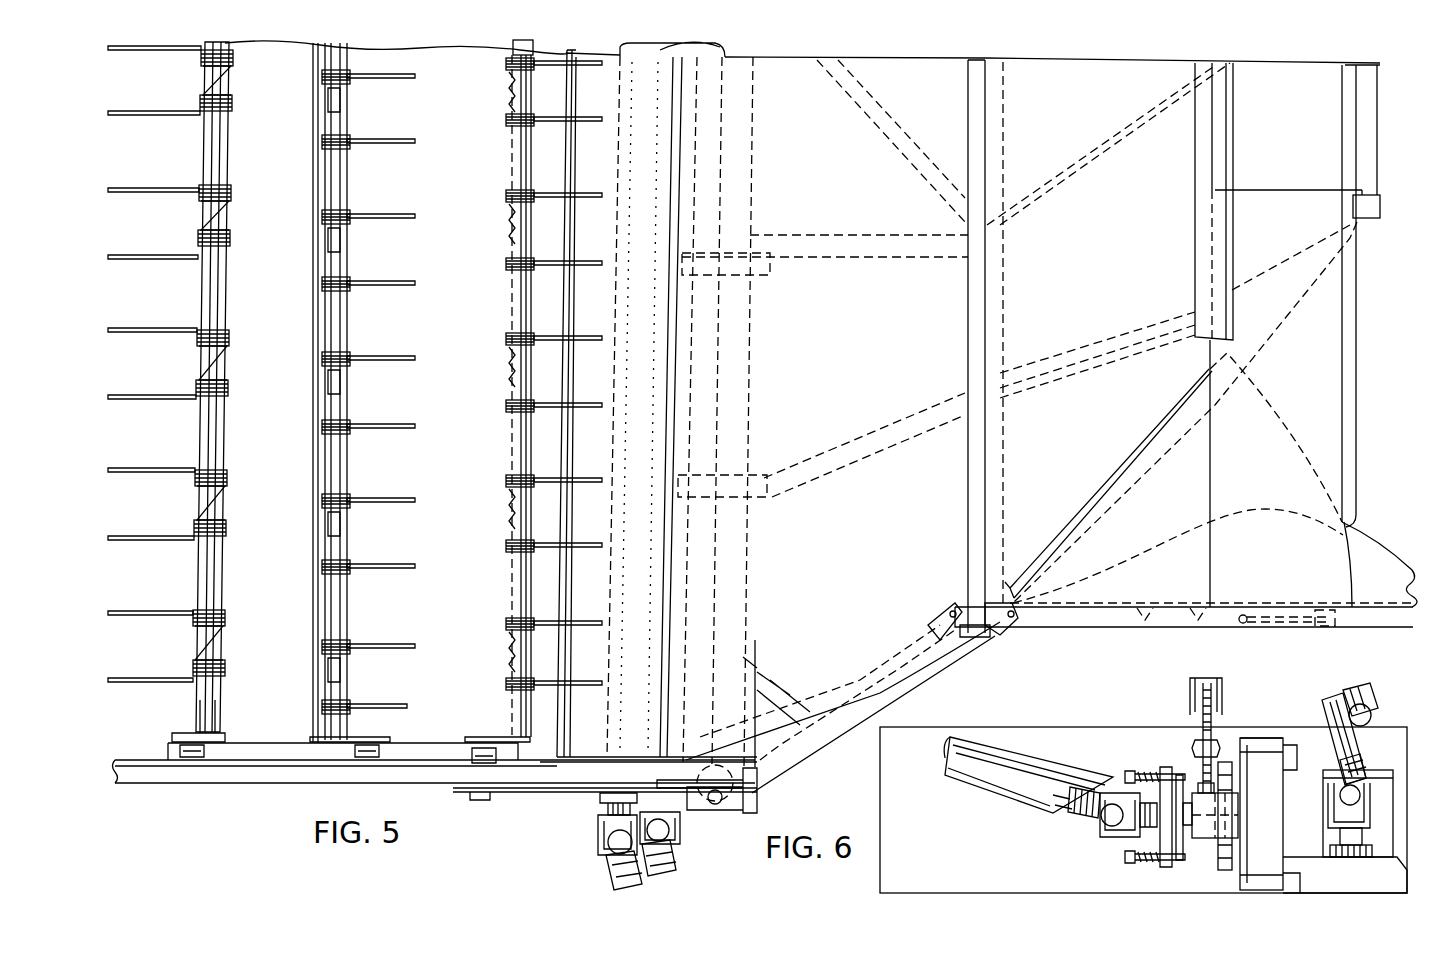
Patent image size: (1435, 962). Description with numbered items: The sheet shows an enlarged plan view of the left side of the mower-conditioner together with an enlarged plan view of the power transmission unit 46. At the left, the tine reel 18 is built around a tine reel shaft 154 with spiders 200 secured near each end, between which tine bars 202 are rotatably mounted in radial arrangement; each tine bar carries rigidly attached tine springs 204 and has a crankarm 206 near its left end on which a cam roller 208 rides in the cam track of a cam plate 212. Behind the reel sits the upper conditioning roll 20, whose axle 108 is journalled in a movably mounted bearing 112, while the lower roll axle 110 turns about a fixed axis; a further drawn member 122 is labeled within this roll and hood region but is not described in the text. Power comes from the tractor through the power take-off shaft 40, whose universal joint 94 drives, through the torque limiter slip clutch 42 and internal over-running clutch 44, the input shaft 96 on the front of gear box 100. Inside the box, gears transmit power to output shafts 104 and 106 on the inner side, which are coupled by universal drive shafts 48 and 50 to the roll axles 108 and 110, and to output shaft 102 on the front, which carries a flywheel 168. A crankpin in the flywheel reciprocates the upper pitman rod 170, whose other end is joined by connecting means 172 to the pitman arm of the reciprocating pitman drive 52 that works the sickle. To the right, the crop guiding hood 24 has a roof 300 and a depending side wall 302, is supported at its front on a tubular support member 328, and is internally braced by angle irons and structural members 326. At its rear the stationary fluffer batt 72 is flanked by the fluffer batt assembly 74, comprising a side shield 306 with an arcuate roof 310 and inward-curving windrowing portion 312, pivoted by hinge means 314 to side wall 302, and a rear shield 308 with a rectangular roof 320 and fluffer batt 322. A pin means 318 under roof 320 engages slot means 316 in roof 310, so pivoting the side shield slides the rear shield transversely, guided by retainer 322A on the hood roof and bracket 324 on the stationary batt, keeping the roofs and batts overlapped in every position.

In FIG. 5, the tine reel 18 is at (355, 377).
In FIG. 5, the upper conditioning roll 20 is at (570, 593).
In FIG. 5, the crop guiding hood 24 is at (823, 412).
In FIG. 6, the power take-off shaft 40 is at (993, 792).
In FIG. 6, the torque limiter slip clutch 42 is at (1160, 768).
In FIG. 6, the internal over-running clutch 44 is at (1178, 840).
In FIG. 6, the power transmission unit 46 is at (1261, 814).
In FIG. 5, the universal drive shaft 48 is at (607, 872).
In FIG. 6, the universal drive shaft 48 is at (1325, 713).
In FIG. 5, the universal drive shaft 50 is at (672, 866).
In FIG. 6, the universal drive shaft 50 is at (1372, 700).
In FIG. 6, the reciprocating pitman drive 52 is at (1243, 732).
In FIG. 5, the stationary fluffer batt 72 is at (1352, 155).
In FIG. 5, the fluffer batt assembly 74 is at (1068, 640).
In FIG. 6, the universal joint 94 is at (1108, 824).
In FIG. 6, the input shaft 96 is at (1186, 798).
In FIG. 6, the gear box 100 is at (1310, 880).
In FIG. 6, the power output shaft 102 is at (1232, 815).
In FIG. 6, the power output shaft 104 is at (1338, 833).
In FIG. 6, the power output shaft 106 is at (1365, 757).
In FIG. 5, the axle 108 is at (623, 758).
In FIG. 5, the axle 110 is at (653, 752).
In FIG. 5, the bearing 112 is at (600, 798).
In FIG. 5, the guide member 122 is at (690, 430).
In FIG. 5, the tine reel shaft 154 is at (318, 602).
In FIG. 6, the flywheel 168 is at (1232, 778).
In FIG. 6, the upper pitman rod 170 is at (1200, 720).
In FIG. 6, the connecting means 172 is at (1212, 686).
In FIG. 5, the spiders 200 is at (445, 750).
In FIG. 5, the tine bars 202 is at (223, 556).
In FIG. 5, the tine springs 204 is at (388, 563).
In FIG. 5, the crankarm 206 is at (180, 734).
In FIG. 5, the cam roller 208 is at (205, 752).
In FIG. 5, the cam plate 212 is at (172, 745).
In FIG. 5, the roof 300 is at (1095, 348).
In FIG. 5, the side wall 302 is at (822, 722).
In FIG. 5, the side shield 306 is at (1352, 636).
In FIG. 5, the rear shield 308 is at (1390, 441).
In FIG. 5, the roof 310 is at (1118, 468).
In FIG. 5, the windrowing portion 312 is at (1377, 553).
In FIG. 5, the hinge means 314 is at (1010, 628).
In FIG. 5, the slot means 316 is at (1322, 630).
In FIG. 5, the pin means 318 is at (1246, 624).
In FIG. 5, the roof 320 is at (1342, 383).
In FIG. 5, the fluffer batt 322 is at (1358, 338).
In FIG. 5, the retainer 322A is at (1195, 193).
In FIG. 5, the bracket 324 is at (1367, 220).
In FIG. 5, the angle irons and structural members 326 is at (1073, 350).
In FIG. 5, the tubular support member 328 is at (745, 592).